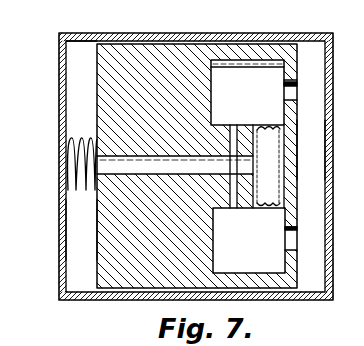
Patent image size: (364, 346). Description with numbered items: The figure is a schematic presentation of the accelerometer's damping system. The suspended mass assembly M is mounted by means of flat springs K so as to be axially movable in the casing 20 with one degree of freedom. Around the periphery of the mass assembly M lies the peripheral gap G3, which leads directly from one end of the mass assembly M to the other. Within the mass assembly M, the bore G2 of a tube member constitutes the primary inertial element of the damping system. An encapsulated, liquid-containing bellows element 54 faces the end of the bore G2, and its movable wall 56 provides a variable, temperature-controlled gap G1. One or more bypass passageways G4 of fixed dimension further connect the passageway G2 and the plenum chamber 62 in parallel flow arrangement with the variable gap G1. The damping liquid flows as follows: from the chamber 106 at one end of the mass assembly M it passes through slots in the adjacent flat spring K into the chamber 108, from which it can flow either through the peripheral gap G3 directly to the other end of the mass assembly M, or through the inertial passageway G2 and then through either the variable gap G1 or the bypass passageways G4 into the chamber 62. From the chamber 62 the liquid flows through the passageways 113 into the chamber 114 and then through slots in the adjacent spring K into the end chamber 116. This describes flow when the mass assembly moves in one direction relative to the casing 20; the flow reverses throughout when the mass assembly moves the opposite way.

The casing 20 is at (59, 115).
The peripheral gap G3 is at (90, 46).
The flat springs K is at (65, 194).
The chamber 106 is at (92, 229).
The chamber 108 is at (92, 251).
The bore G2 is at (178, 173).
The suspended mass assembly M is at (166, 231).
The bypass passageways G4 is at (232, 121).
The variable gap G1 is at (257, 121).
The bellows element 54 is at (277, 166).
The movable wall 56 is at (259, 206).
The plenum chamber 62 is at (256, 255).
The passageways 113 is at (297, 89).
The chamber 114 is at (318, 156).
The end chamber 116 is at (318, 175).